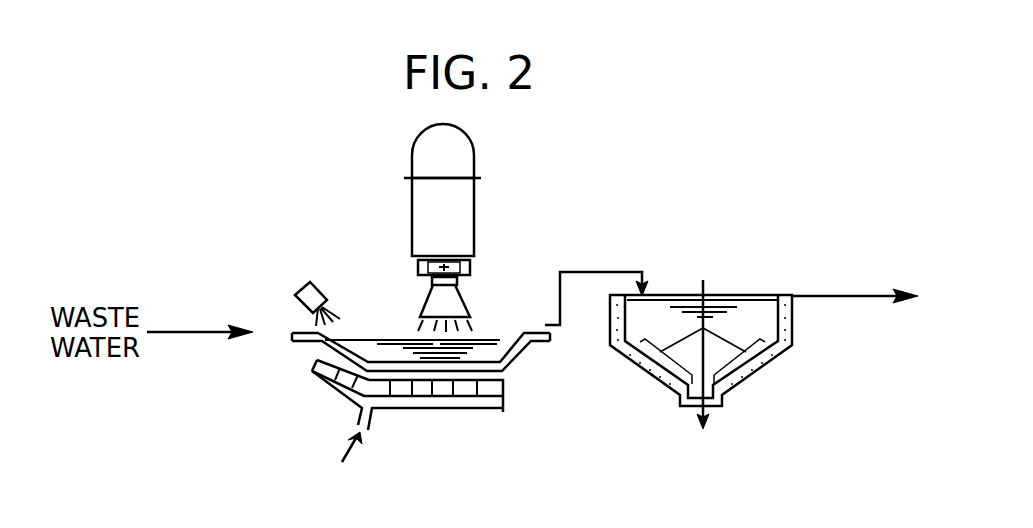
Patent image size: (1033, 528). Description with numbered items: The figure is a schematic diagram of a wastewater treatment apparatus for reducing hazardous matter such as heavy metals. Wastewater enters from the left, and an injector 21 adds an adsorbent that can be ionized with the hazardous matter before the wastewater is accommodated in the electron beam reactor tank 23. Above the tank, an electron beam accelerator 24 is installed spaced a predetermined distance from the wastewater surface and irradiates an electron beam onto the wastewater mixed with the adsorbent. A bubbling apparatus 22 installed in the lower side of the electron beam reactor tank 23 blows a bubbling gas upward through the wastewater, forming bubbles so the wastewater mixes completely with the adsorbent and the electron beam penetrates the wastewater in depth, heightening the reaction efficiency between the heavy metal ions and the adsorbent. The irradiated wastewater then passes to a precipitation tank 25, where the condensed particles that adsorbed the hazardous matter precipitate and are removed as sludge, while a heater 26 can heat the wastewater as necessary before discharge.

The injector 21 is at (319, 284).
The bubbling apparatus 22 is at (428, 409).
The electron beam reactor tank 23 is at (532, 373).
The electron beam accelerator 24 is at (465, 193).
The precipitation tank 25 is at (753, 357).
The heater 26 is at (793, 322).